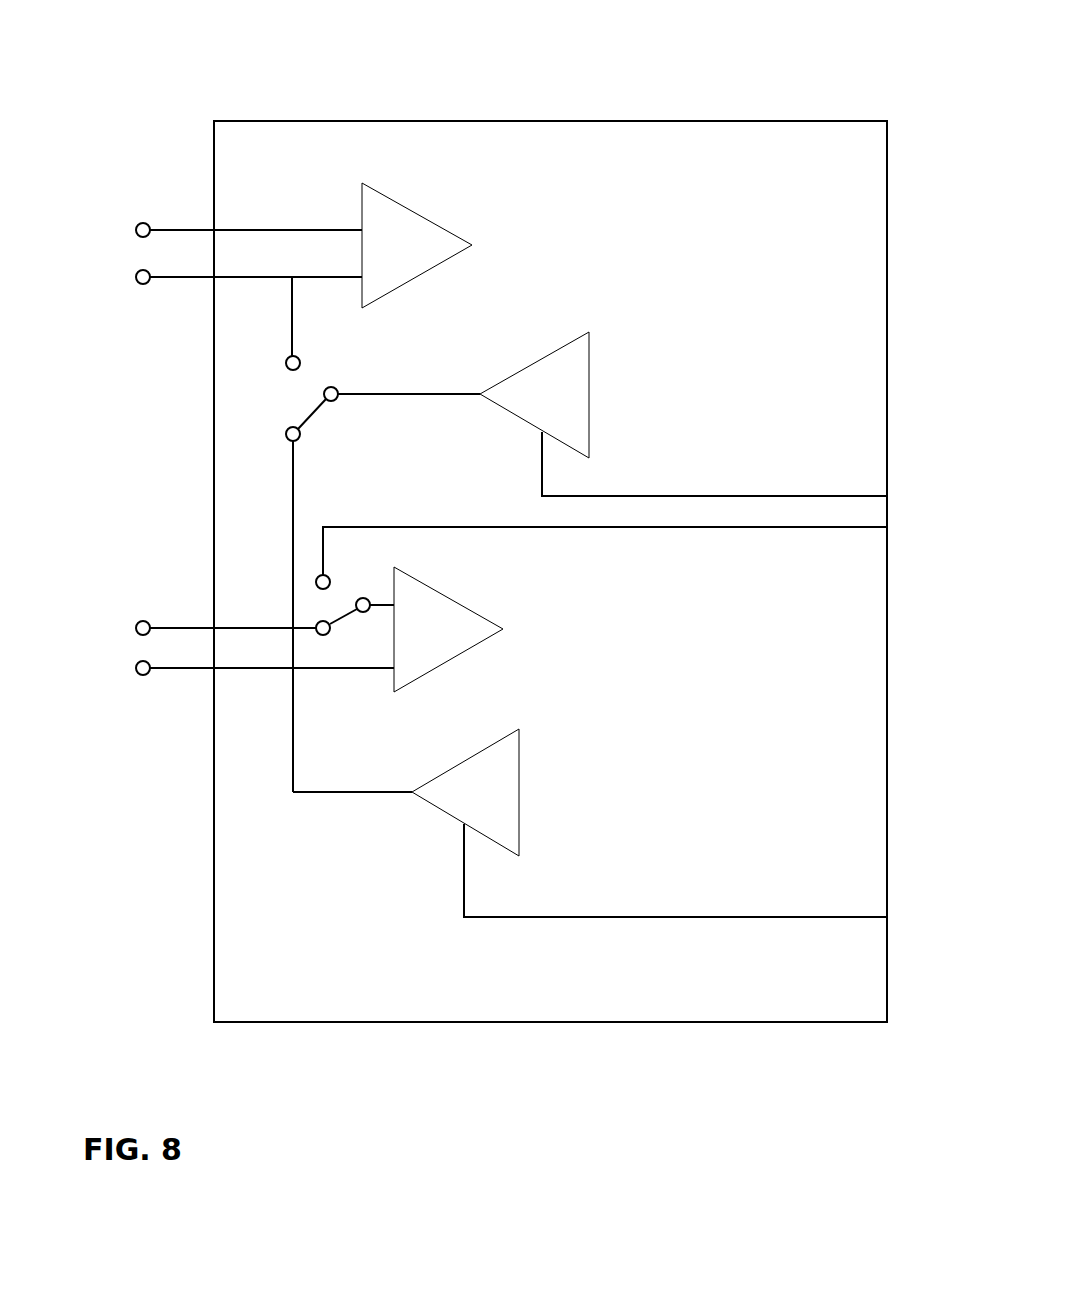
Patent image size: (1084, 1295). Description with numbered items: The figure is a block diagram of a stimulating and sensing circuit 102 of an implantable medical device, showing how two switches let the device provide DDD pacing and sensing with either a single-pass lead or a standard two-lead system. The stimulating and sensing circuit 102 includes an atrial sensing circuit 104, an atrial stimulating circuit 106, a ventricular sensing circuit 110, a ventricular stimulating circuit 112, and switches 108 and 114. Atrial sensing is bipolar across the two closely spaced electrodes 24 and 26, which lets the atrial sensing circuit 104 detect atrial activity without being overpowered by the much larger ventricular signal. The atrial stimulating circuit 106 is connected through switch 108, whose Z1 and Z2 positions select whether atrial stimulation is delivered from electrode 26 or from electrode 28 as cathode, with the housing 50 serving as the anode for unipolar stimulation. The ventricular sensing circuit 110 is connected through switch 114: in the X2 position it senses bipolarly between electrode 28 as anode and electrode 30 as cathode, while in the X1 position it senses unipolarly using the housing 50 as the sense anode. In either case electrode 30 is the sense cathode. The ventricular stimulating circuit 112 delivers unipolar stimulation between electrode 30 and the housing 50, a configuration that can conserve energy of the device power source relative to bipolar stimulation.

The electrode 24 is at (235, 231).
The electrode 26 is at (235, 278).
The electrode 28 is at (212, 629).
The electrode 30 is at (251, 669).
The housing 50 is at (838, 1018).
The stimulating and sensing circuit 102 is at (280, 58).
The atrial sensing circuit 104 is at (417, 212).
The atrial stimulating circuit 106 is at (589, 338).
The switch 108 is at (323, 364).
The ventricular sensing circuit 110 is at (479, 620).
The ventricular stimulating circuit 112 is at (449, 808).
The switch 114 is at (377, 568).